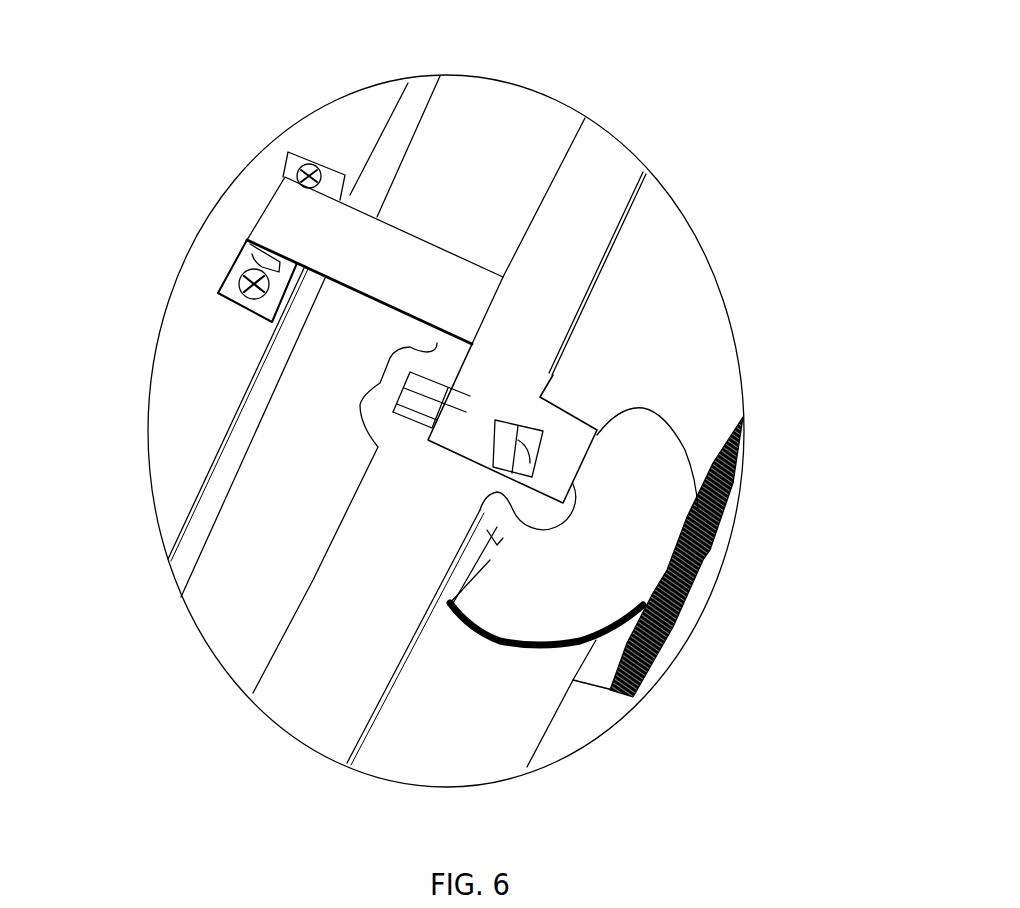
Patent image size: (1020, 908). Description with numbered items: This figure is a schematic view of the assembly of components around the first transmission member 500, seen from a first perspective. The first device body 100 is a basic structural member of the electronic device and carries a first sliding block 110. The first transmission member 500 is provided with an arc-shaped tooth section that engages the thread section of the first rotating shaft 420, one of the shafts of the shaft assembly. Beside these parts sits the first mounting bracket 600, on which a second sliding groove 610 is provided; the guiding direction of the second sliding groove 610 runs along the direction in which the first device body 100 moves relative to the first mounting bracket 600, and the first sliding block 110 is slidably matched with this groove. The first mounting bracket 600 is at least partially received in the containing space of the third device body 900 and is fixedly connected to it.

The first device body 100 is at (222, 335).
The first sliding block 110 is at (481, 420).
The third device body 900 is at (483, 138).
The first transmission member 500 is at (655, 443).
The first rotating shaft 420 is at (710, 543).
The first mounting bracket 600 is at (403, 500).
The second sliding groove 610 is at (407, 403).